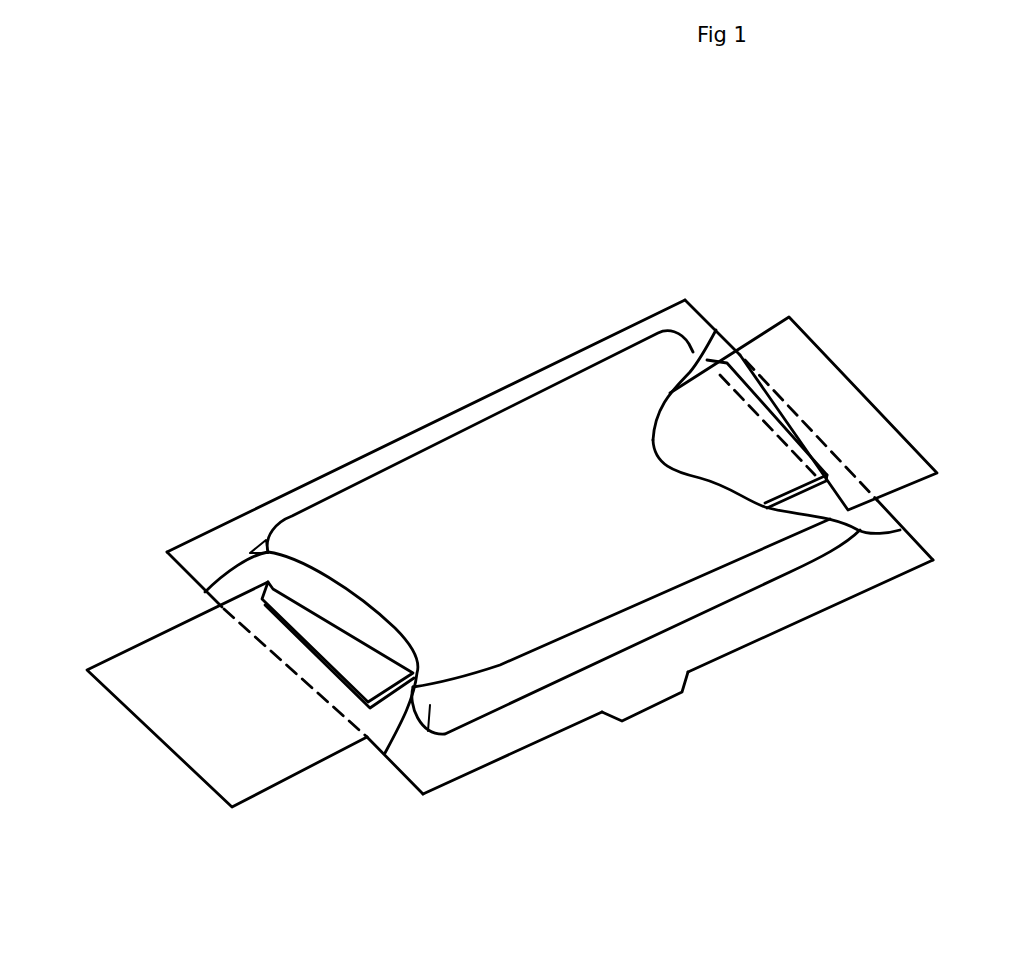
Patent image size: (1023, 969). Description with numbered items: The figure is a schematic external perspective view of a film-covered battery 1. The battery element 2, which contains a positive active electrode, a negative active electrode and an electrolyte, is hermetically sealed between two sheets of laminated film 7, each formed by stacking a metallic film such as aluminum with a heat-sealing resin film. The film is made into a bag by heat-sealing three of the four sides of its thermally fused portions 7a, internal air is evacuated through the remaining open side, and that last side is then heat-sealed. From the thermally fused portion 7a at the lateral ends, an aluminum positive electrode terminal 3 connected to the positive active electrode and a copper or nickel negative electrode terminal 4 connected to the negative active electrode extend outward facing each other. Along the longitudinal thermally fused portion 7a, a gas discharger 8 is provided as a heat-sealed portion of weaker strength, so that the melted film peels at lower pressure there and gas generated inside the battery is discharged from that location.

The film-covered battery 1 is at (292, 259).
The battery element 2 is at (690, 416).
The positive electrode terminal 3 is at (890, 443).
The negative electrode terminal 4 is at (290, 750).
The laminated film 7 is at (527, 343).
The thermally fused portion 7a is at (765, 610).
The gas discharger 8 is at (657, 687).